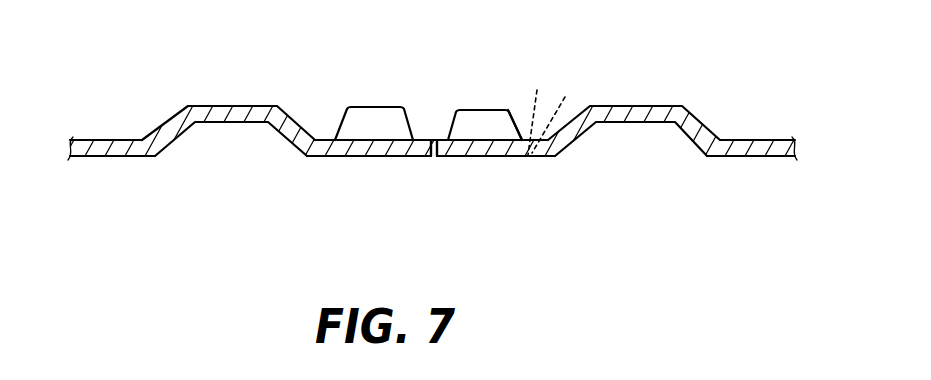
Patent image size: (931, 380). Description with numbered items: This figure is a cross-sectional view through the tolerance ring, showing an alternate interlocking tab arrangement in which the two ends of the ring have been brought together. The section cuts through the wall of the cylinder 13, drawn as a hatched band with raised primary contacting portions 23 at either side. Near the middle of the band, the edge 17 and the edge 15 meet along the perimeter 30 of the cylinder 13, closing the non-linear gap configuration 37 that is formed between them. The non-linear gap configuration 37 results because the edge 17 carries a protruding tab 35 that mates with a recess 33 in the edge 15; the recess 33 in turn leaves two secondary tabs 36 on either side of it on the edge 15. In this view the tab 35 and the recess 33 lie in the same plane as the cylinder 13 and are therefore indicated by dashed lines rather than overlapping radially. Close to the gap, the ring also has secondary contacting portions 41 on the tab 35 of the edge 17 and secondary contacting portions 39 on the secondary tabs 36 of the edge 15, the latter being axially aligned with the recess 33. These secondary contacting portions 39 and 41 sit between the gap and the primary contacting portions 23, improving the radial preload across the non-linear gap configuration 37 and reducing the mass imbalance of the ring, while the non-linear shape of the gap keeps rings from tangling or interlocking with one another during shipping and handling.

The cylinder 13 is at (107, 150).
The primary contacting portions 23 is at (222, 106).
The edge 17 is at (432, 157).
The edge 15 is at (437, 157).
The perimeter 30 is at (432, 158).
The non-linear gap configuration 37 is at (432, 139).
The secondary contacting portions 41 is at (370, 107).
The secondary contacting portions 39 is at (462, 110).
The secondary tabs 36 is at (488, 140).
The tab 35 is at (545, 109).
The recess 33 is at (564, 112).